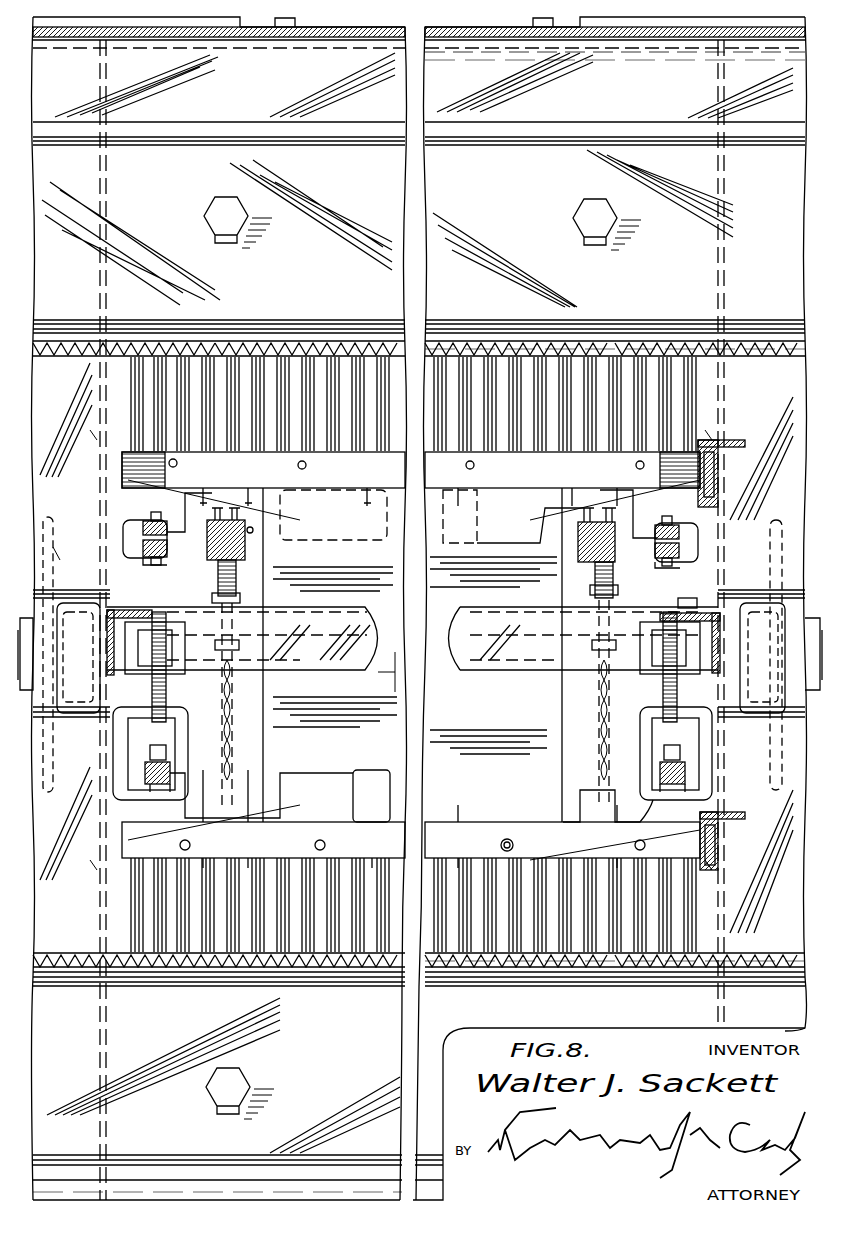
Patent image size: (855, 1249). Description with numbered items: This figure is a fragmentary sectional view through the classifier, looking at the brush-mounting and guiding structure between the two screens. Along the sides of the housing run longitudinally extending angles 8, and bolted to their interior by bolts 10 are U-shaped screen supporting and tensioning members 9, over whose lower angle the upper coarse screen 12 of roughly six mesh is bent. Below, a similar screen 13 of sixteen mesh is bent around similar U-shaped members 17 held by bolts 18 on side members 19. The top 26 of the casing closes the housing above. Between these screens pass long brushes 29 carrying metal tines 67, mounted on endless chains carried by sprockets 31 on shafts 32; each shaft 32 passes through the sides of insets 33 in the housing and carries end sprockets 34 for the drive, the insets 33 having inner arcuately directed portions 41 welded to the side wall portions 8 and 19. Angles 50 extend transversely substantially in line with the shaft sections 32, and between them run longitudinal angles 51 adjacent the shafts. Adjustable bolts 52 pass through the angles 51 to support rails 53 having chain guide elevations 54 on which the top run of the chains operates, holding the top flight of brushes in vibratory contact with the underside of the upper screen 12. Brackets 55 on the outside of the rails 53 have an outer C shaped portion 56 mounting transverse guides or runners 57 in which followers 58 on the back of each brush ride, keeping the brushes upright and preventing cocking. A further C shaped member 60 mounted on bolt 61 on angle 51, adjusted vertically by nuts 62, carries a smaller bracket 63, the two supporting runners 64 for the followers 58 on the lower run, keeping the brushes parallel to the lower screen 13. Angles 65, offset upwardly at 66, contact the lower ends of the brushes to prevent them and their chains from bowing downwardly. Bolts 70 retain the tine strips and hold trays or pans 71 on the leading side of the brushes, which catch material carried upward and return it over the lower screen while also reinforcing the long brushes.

The longitudinally extending angles 8 is at (635, 105).
The U-shaped screen supporting and tensioning members 9 is at (520, 162).
The bolts 10 is at (222, 212).
The upper coarse screen 12 is at (632, 347).
The lower screen 13 is at (632, 970).
The U-shaped screen supporting and tensioning members 17 is at (330, 1047).
The bolts 18 is at (222, 1088).
The side members 19 is at (138, 1190).
The top 26 is at (642, 37).
The brushes 29 is at (280, 510).
The sprockets 31 is at (234, 723).
The shafts 32 is at (385, 660).
The insets 33 is at (421, 501).
The sprockets 34 is at (769, 549).
The inner arcuately directed portions 41 is at (742, 922).
The angles 50 is at (142, 610).
The angles 51 is at (355, 622).
The adjustable bolts 52 is at (238, 572).
The rails 53 is at (245, 522).
The chain guide elevations 54 is at (240, 505).
The brackets 55 is at (143, 563).
The C shaped portion 56 is at (140, 528).
The guides or runners 57 is at (150, 535).
The followers 58 is at (148, 541).
The C shaped member 60 is at (115, 793).
The bolt 61 is at (166, 683).
The nuts 62 is at (150, 660).
The bracket 63 is at (150, 758).
The guides or runners 64 is at (142, 780).
The angles 65 is at (705, 473).
The upward offset 66 is at (710, 483).
The metal tines 67 is at (312, 355).
The bolts 70 is at (540, 482).
The trays or pans 71 is at (337, 770).